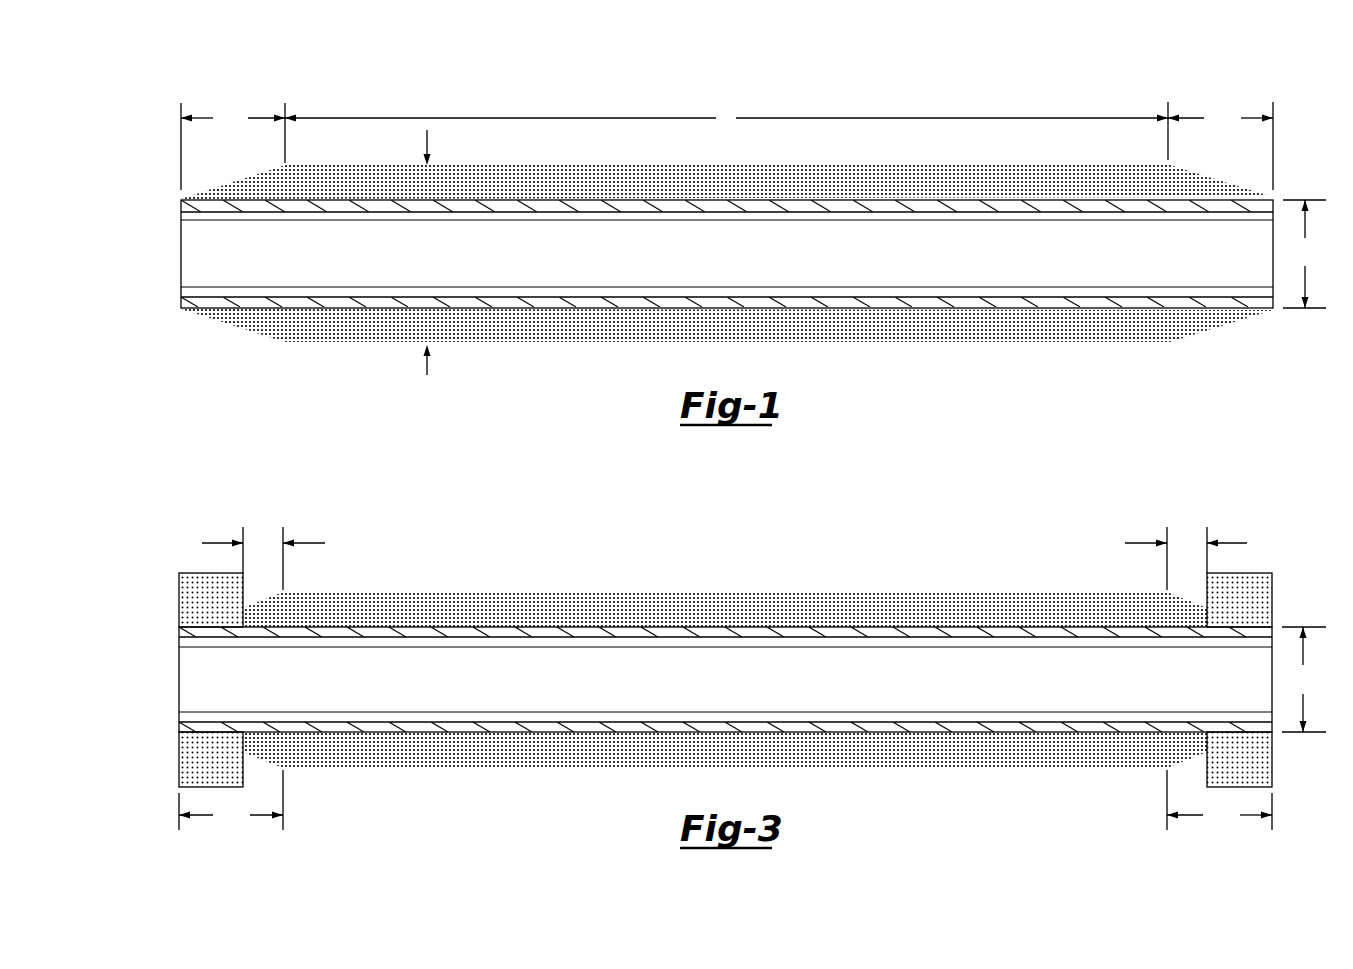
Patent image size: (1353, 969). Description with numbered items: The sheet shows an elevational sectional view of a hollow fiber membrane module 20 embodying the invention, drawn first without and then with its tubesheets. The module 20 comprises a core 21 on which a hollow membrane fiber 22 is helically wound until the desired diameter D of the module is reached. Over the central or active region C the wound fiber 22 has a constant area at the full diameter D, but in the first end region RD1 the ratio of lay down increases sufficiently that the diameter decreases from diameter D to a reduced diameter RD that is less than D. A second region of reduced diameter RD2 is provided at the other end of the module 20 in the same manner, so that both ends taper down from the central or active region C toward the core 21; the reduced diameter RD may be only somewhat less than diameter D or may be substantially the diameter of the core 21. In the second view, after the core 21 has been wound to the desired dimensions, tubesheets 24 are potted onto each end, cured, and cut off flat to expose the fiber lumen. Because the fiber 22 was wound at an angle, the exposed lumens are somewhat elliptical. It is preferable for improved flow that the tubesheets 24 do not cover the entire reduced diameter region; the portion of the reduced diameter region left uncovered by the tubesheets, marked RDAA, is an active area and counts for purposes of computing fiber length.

In FIG. 1, the hollow fiber membrane module 20 is at (1026, 104).
In FIG. 1, the core 21 is at (898, 213).
In FIG. 3, the core 21 is at (895, 638).
In FIG. 1, the hollow membrane fiber 22 is at (552, 165).
In FIG. 3, the hollow membrane fiber 22 is at (725, 680).
In FIG. 3, the tubesheet 24 is at (206, 589).
In FIG. 1, the central or active region C is at (726, 131).
In FIG. 1, the diameter of the module D is at (427, 263).
In FIG. 1, the reduced diameter RD is at (1304, 254).
In FIG. 3, the reduced diameter RD is at (1304, 679).
In FIG. 1, the first end region of reduced diameter RD1 is at (233, 146).
In FIG. 3, the first end region of reduced diameter RD1 is at (231, 800).
In FIG. 1, the second region of reduced diameter RD2 is at (1220, 146).
In FIG. 3, the second region of reduced diameter RD2 is at (1219, 800).
In FIG. 3, the active area not covered by tubesheet RDAA is at (730, 558).